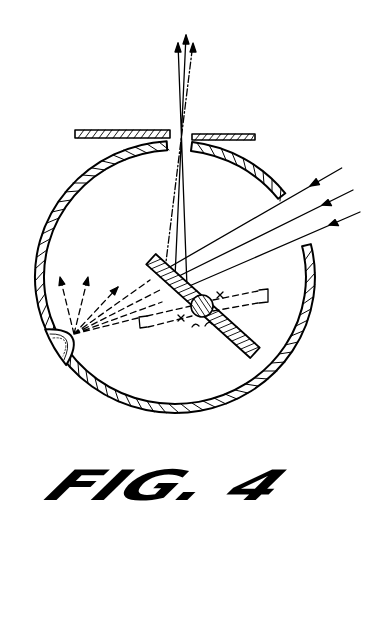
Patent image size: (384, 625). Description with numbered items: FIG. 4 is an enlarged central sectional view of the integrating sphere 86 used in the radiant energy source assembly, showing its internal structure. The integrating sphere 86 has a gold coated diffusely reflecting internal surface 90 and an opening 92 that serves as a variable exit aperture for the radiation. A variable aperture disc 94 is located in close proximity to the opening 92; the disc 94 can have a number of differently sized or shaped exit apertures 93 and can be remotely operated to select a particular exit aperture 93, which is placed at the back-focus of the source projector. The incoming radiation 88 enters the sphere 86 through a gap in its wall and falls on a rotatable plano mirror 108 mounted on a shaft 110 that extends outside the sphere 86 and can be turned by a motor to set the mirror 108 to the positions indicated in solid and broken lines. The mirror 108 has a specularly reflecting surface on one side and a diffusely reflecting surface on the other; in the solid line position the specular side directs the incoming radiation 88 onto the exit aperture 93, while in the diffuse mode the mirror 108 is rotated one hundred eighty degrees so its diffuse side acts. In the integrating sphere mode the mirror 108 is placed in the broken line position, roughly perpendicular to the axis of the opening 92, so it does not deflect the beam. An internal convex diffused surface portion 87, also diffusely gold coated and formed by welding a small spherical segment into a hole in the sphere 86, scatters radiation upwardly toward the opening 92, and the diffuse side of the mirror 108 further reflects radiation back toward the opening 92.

The integrating sphere 86 is at (264, 378).
The internal convex diffused surface portion 87 is at (78, 357).
The incident light beam 88 is at (317, 239).
The diffusely reflecting internal surface 90 is at (52, 243).
The opening 92 is at (171, 145).
The exit aperture 93 is at (191, 128).
The variable aperture disc 94 is at (243, 133).
The rotatable plano mirror 108 is at (247, 350).
The shaft 110 is at (206, 318).